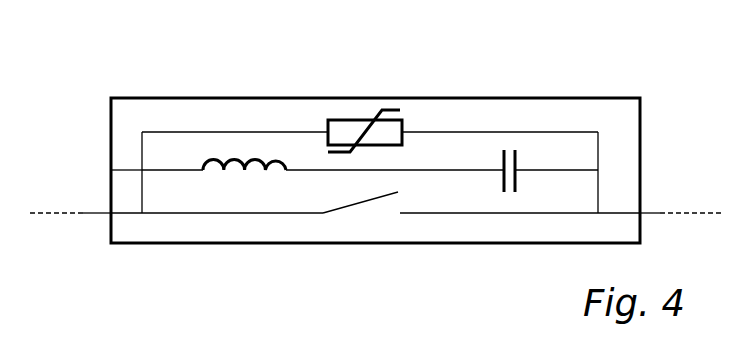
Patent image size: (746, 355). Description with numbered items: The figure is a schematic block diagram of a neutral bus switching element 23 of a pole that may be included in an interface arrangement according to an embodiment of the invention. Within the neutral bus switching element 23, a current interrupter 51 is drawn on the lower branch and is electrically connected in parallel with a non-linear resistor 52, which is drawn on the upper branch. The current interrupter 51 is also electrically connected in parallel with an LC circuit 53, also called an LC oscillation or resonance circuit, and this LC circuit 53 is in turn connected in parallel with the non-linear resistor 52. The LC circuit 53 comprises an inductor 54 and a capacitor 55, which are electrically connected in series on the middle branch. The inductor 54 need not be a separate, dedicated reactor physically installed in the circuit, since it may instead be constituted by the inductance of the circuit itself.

The neutral bus switching element 23 is at (572, 98).
The current interrupter 51 is at (366, 214).
The non-linear resistor 52 is at (342, 119).
The LC circuit 53 is at (133, 170).
The inductor 54 is at (234, 149).
The capacitor 55 is at (494, 157).